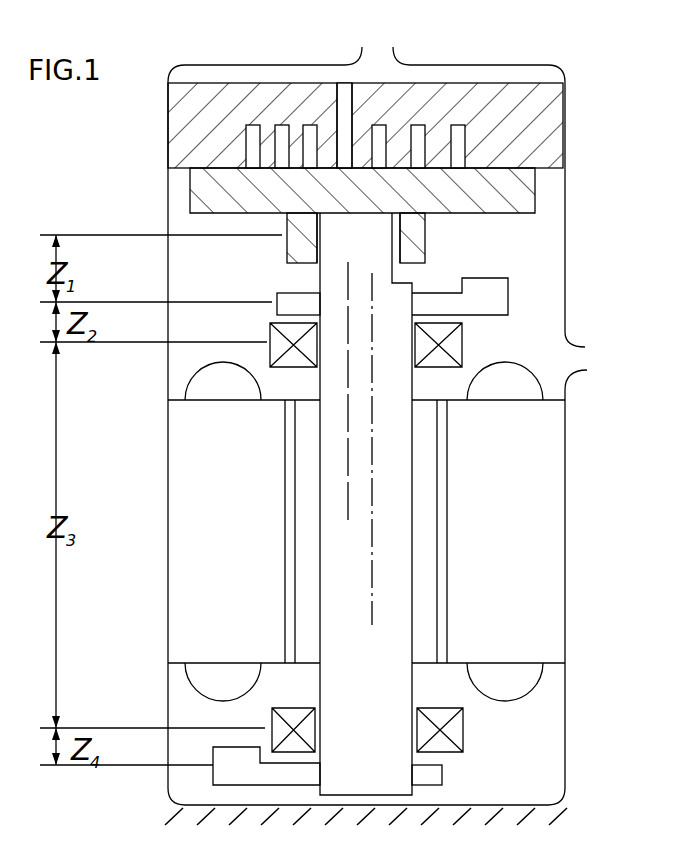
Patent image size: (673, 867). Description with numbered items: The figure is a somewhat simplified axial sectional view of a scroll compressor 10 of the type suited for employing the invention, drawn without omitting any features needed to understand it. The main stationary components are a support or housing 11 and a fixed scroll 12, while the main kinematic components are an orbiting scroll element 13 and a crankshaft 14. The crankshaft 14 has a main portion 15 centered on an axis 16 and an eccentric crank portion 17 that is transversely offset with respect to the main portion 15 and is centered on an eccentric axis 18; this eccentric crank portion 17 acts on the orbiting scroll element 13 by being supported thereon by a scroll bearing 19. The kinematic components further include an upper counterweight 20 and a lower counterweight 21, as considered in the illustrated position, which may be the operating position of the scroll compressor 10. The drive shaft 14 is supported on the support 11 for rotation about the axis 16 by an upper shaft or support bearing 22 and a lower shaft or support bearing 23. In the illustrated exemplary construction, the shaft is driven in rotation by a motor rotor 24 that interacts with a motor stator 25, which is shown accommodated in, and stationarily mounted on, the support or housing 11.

The scroll compressor 10 is at (138, 194).
The support or housing 11 is at (366, 148).
The fixed scroll 12 is at (545, 124).
The orbiting scroll element 13 is at (540, 178).
The crankshaft 14 is at (393, 535).
The main portion 15 is at (412, 432).
The axis 16 is at (372, 568).
The eccentric crank portion 17 is at (400, 270).
The eccentric axis 18 is at (346, 272).
The scroll bearing 19 is at (414, 243).
The upper counterweight 20 is at (497, 296).
The lower counterweight 21 is at (430, 777).
The upper shaft or support bearing 22 is at (452, 352).
The lower shaft or support bearing 23 is at (453, 730).
The motor rotor 24 is at (425, 580).
The motor stator 25 is at (527, 463).